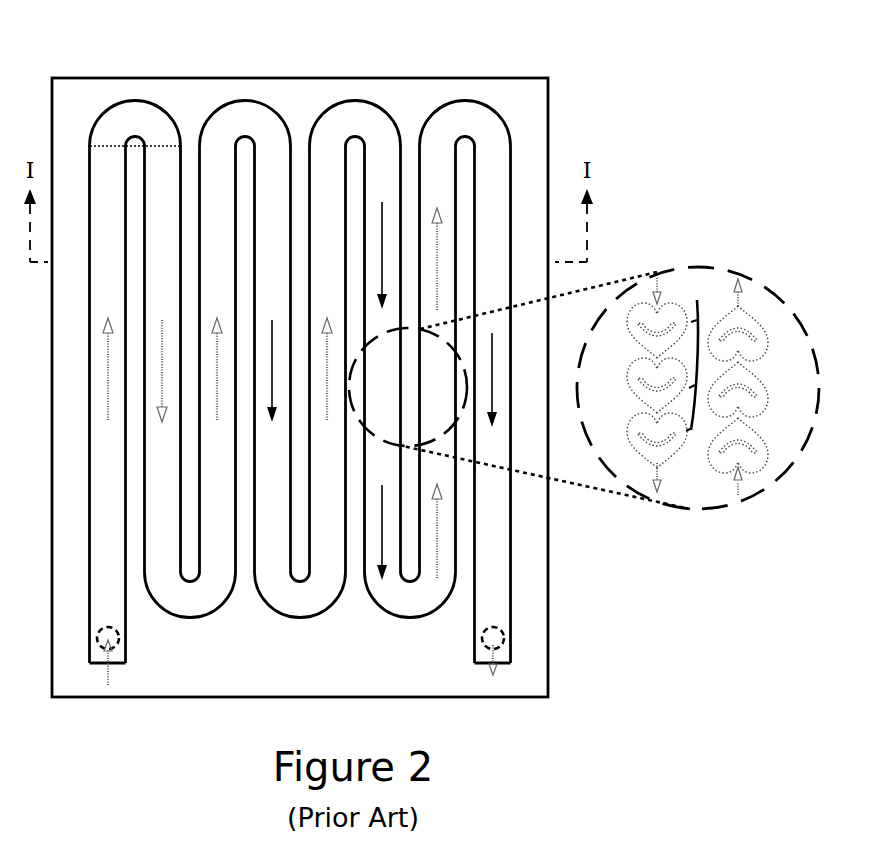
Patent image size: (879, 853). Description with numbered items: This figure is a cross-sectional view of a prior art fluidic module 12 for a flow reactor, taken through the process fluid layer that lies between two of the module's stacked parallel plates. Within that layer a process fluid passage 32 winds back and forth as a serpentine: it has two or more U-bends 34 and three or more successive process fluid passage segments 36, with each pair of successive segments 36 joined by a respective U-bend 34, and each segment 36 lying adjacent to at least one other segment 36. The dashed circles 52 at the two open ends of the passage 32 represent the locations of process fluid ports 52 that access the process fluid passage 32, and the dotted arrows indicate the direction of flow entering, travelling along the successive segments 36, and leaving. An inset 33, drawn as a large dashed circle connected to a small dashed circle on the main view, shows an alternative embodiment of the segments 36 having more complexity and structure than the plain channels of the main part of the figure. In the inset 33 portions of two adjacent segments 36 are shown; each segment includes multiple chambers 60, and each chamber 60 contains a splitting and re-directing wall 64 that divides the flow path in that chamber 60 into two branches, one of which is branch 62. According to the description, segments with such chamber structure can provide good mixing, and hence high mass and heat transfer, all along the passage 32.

The fluidic module 12 is at (188, 745).
The process fluid passage 32 is at (85, 72).
The inset 33 is at (688, 552).
The U-bends 34 is at (300, 359).
The process fluid passage segments 36 is at (80, 576).
The process fluid ports 52 is at (97, 640).
The chambers 60 is at (697, 300).
The branch 62 is at (637, 370).
The splitting and re-directing wall 64 is at (640, 385).